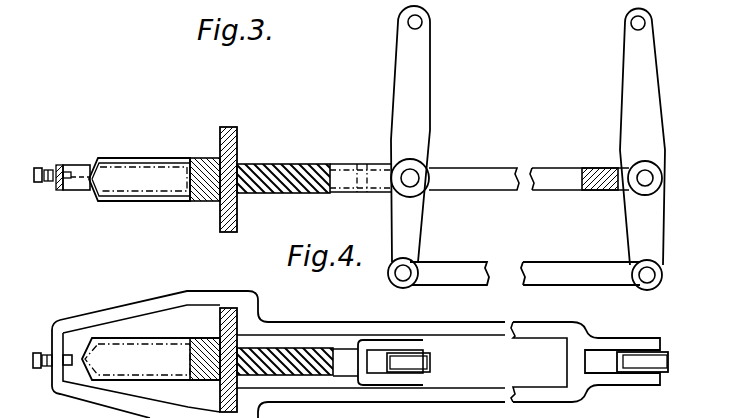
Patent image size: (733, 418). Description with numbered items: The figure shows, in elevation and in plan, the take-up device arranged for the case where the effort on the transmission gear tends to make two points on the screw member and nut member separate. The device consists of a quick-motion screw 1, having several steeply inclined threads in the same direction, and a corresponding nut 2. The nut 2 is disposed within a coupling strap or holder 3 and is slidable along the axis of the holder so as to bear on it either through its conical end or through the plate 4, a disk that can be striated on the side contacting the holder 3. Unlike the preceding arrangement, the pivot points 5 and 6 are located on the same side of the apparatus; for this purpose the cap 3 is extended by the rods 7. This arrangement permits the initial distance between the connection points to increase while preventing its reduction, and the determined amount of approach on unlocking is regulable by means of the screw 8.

In FIG. 3, the screw 1 is at (263, 165).
In FIG. 4, the screw 1 is at (292, 376).
In FIG. 3, the nut 2 is at (190, 160).
In FIG. 4, the nut 2 is at (180, 347).
In FIG. 4, the coupling strap or holder 3 is at (118, 313).
In FIG. 3, the plate 4 is at (224, 235).
In FIG. 4, the plate 4 is at (233, 308).
In FIG. 3, the pivot point 5 is at (414, 175).
In FIG. 4, the pivot point 5 is at (408, 352).
In FIG. 3, the pivot point 6 is at (640, 176).
In FIG. 4, the pivot point 6 is at (637, 362).
In FIG. 3, the rods 7 is at (502, 172).
In FIG. 4, the rods 7 is at (470, 387).
In FIG. 4, the screw 8 is at (68, 359).